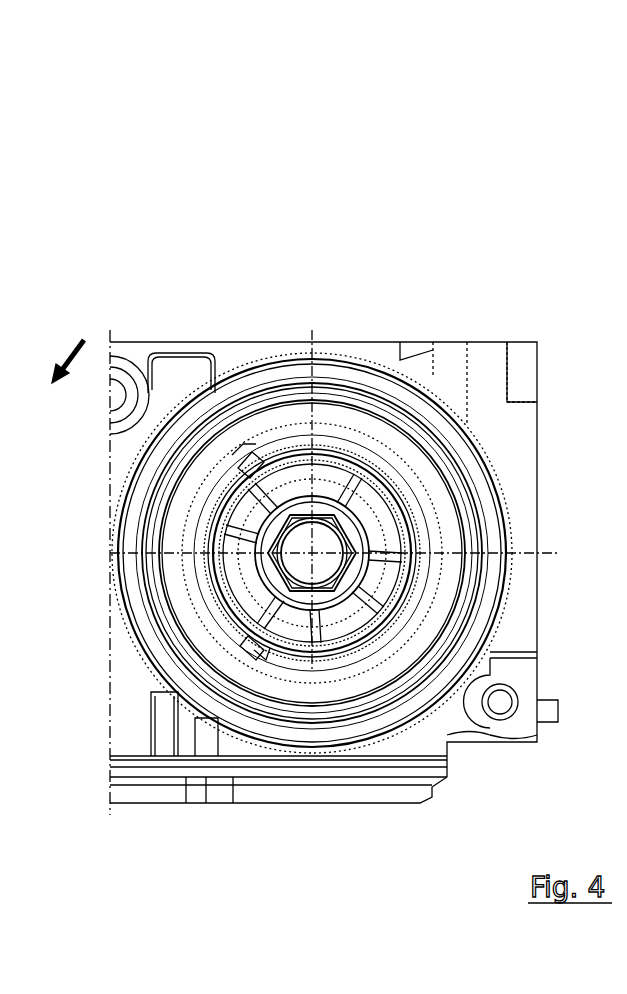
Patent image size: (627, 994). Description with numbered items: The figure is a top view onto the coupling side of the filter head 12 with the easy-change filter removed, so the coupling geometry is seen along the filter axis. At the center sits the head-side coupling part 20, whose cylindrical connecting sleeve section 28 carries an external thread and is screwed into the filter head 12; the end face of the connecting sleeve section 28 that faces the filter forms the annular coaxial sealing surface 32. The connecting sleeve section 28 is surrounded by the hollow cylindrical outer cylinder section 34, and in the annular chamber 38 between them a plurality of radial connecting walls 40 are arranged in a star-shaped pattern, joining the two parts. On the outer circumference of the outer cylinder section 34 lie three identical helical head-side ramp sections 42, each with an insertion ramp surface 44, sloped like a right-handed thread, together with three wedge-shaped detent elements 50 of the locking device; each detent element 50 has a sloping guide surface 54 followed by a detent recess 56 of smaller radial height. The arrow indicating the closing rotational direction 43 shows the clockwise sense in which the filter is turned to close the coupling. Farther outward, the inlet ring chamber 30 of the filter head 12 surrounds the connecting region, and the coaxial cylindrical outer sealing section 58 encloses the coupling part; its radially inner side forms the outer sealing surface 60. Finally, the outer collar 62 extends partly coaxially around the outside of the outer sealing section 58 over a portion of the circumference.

The filter head 12 is at (117, 226).
The head-side coupling part 20 is at (412, 582).
The connecting sleeve section 28 is at (357, 565).
The inlet ring chamber 30 is at (297, 413).
The sealing surface 32 is at (237, 610).
The outer cylinder section 34 is at (373, 627).
The annular chamber 38 is at (380, 527).
The radial connecting walls 40 is at (277, 497).
The head-side ramp sections 42 is at (341, 413).
The closing rotational direction 43 is at (82, 338).
The insertion ramp surface 44 is at (378, 485).
The detent elements 50 is at (243, 452).
The guide surface 54 is at (232, 472).
The detent recess 56 is at (254, 443).
The outer sealing section 58 is at (313, 410).
The outer sealing surface 60 is at (340, 458).
The outer collar 62 is at (453, 405).